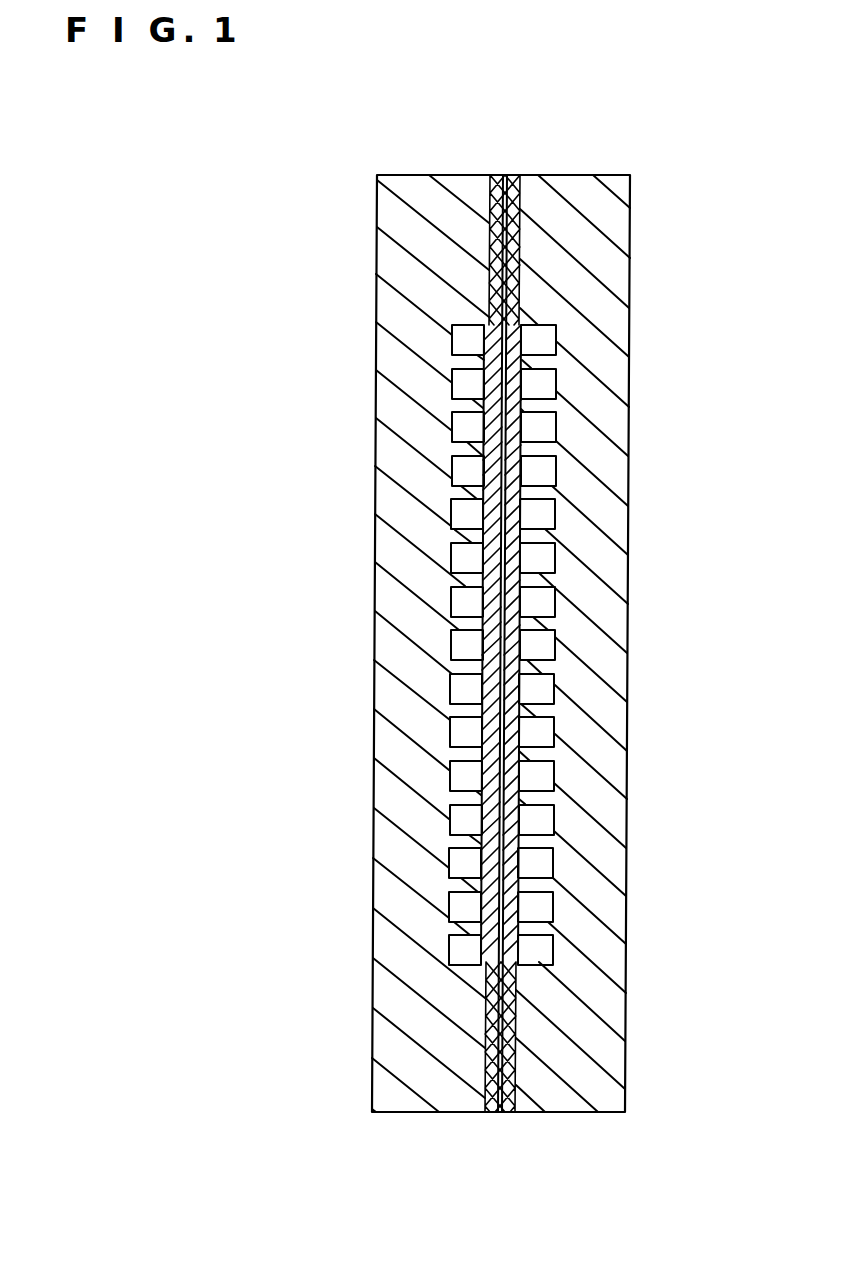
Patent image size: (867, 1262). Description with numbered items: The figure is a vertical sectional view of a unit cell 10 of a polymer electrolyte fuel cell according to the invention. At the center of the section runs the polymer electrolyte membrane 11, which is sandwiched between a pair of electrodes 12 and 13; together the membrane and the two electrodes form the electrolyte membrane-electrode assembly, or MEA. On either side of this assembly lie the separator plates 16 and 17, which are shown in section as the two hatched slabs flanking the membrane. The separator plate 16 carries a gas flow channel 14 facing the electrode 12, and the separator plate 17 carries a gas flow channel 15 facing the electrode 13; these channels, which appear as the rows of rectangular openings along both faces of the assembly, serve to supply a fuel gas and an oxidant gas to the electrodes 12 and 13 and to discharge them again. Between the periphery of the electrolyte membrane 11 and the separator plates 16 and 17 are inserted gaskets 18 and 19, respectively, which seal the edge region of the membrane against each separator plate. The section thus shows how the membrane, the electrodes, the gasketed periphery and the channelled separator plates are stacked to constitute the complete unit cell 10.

The unit cell 10 is at (466, 100).
The polymer electrolyte membrane 11 is at (504, 182).
The electrode 12 is at (497, 427).
The electrode 13 is at (527, 397).
The gas flow channel 14 is at (460, 692).
The gas flow channel 15 is at (540, 732).
The separator plate 16 is at (422, 1078).
The separator plate 17 is at (593, 1090).
The gasket 18 is at (482, 202).
The gasket 19 is at (524, 202).